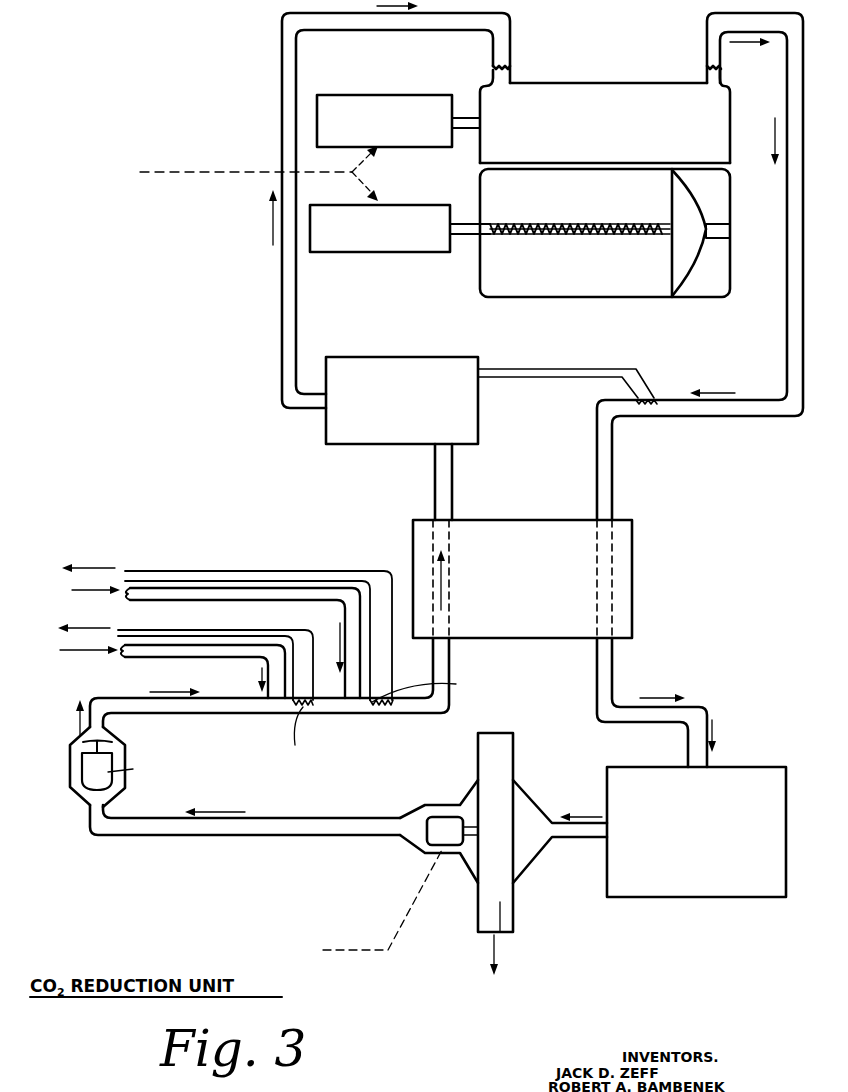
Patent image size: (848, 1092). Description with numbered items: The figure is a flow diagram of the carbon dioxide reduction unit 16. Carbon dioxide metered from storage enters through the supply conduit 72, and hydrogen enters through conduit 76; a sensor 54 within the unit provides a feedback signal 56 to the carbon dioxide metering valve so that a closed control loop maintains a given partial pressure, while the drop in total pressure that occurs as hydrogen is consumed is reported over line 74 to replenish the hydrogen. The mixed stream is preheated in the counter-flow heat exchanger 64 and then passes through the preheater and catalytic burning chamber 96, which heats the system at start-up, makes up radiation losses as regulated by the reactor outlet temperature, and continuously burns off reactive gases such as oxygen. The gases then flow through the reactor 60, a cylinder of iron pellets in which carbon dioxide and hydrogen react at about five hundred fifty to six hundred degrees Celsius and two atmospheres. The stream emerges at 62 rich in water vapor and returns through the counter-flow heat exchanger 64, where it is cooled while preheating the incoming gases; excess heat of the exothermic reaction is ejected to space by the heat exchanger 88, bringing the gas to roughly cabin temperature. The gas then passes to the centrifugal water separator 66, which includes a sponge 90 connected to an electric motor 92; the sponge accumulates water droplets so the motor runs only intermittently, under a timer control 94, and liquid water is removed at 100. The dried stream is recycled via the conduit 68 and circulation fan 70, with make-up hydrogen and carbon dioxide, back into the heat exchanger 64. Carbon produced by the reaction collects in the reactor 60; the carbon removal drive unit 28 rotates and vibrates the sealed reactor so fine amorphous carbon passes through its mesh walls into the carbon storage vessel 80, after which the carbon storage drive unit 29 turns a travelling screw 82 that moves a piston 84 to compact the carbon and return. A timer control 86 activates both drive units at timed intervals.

The carbon dioxide reduction unit 16 is at (236, 384).
The carbon removal drive unit 28 is at (383, 95).
The carbon storage drive unit 29 is at (414, 252).
The sensor 54 is at (247, 695).
The feedback signal 56 is at (264, 659).
The reactor 60 is at (590, 83).
The reactor outlet 62 is at (786, 331).
The counter-flow heat exchanger 64 is at (505, 523).
The centrifugal water separator 66 is at (512, 928).
The conduit 68 is at (242, 713).
The circulation fan 70 is at (92, 770).
The supply conduit 72 is at (165, 648).
The line 74 is at (348, 577).
The conduit 76 is at (352, 592).
The carbon storage vessel 80 is at (572, 286).
The travelling screw 82 is at (604, 226).
The piston 84 is at (678, 262).
The timer control 86 is at (187, 171).
The heat exchanger 88 is at (733, 812).
The sponge 90 is at (514, 803).
The electric motor 92 is at (443, 817).
The timer control 94 is at (405, 922).
The preheater and catalytic burning chamber 96 is at (350, 438).
The water removal point 100 is at (490, 937).